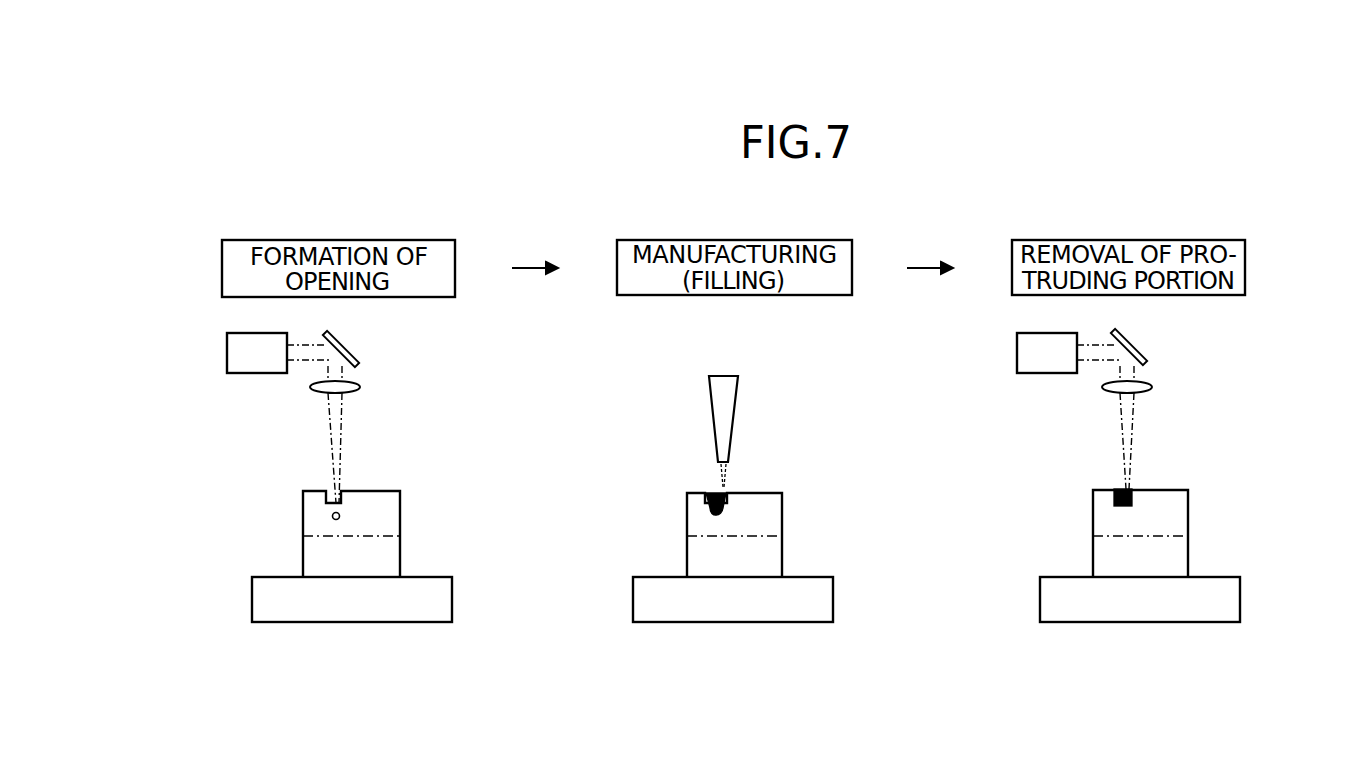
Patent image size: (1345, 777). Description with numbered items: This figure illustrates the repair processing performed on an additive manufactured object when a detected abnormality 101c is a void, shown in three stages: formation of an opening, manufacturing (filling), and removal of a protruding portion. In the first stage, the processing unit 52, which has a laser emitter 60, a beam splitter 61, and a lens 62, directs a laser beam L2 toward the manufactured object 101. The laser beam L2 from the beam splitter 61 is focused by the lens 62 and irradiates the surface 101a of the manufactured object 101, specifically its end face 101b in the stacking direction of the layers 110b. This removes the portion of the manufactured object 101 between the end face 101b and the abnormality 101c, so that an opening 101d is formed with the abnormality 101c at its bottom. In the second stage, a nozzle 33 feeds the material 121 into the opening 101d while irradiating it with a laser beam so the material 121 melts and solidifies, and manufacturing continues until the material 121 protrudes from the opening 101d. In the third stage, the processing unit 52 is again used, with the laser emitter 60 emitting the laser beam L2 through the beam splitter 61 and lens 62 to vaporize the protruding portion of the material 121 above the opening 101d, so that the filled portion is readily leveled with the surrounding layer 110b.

The processing unit 52 is at (216, 320).
The laser emitter 60 is at (245, 373).
The beam splitter 61 is at (350, 342).
The lens 62 is at (358, 386).
The laser beam L2 is at (332, 410).
The nozzle 33 is at (738, 394).
The end face 101b is at (388, 491).
The surface 101a is at (805, 523).
The manufactured object 101 is at (805, 523).
The abnormality 101c is at (332, 516).
The opening 101d is at (717, 495).
The layer 110b is at (400, 510).
The material 121 is at (719, 493).